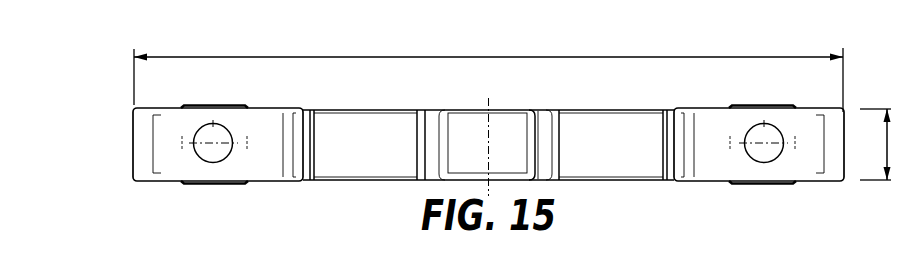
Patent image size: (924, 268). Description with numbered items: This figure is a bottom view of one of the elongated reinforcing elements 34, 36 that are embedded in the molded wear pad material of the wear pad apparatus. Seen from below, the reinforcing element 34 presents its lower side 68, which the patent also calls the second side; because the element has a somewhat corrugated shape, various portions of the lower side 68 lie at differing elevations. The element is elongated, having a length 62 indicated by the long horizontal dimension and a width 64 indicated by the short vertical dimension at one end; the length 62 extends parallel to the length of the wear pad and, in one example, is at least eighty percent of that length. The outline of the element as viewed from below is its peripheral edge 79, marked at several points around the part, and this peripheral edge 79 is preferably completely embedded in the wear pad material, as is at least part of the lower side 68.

The first elongated reinforcing element 34 is at (507, 127).
The second elongated reinforcing element 36 is at (507, 127).
The length 62 is at (462, 57).
The width 64 is at (889, 157).
The lower side 68 is at (345, 127).
The peripheral edge 79 is at (131, 148).